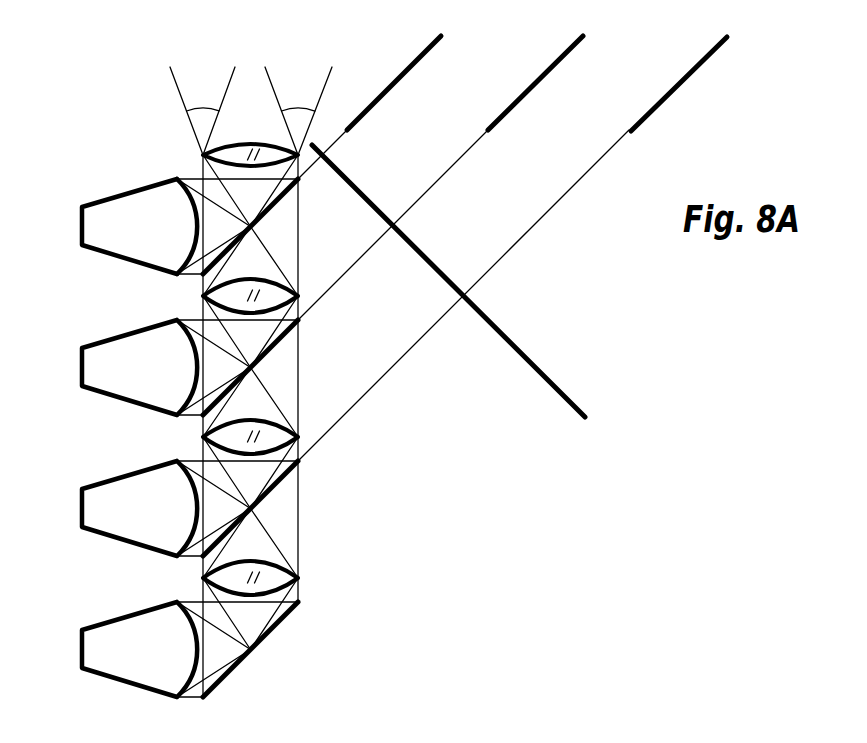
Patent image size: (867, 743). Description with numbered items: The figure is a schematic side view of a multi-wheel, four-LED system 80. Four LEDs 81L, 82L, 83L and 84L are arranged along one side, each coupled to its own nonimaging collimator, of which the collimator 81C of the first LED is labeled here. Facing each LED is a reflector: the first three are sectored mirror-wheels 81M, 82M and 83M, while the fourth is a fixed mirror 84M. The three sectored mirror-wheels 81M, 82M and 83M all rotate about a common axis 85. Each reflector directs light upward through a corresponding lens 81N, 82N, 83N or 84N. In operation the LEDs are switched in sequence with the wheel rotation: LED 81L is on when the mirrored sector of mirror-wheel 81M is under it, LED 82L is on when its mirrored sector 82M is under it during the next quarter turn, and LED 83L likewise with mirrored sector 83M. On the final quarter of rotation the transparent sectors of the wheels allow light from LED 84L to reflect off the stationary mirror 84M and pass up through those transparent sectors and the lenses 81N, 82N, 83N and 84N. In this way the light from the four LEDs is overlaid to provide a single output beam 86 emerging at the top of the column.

The multi-wheel system 80 is at (572, 469).
The nonimaging collimator 81C is at (125, 192).
The LED 81L is at (104, 226).
The sectored mirror-wheel 81M is at (282, 208).
The lens 81N is at (277, 155).
The LED 82L is at (115, 367).
The sectored mirror-wheel 82M is at (282, 353).
The lens 82N is at (277, 296).
The LED 83L is at (117, 508).
The sectored mirror-wheel 83M is at (282, 488).
The lens 83N is at (277, 437).
The LED 84L is at (117, 649).
The fixed mirror 84M is at (282, 628).
The lens 84N is at (277, 580).
The common axis 85 is at (495, 353).
The output beam 86 is at (251, 98).